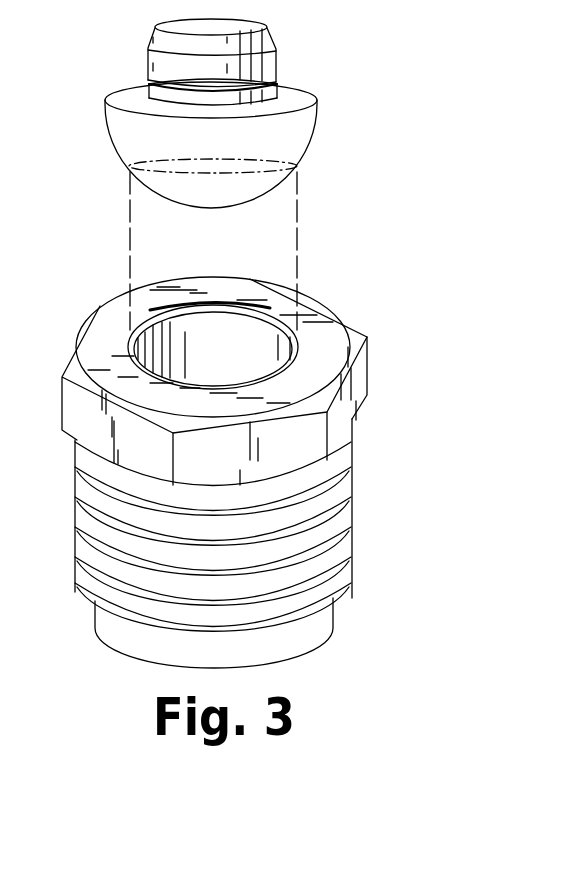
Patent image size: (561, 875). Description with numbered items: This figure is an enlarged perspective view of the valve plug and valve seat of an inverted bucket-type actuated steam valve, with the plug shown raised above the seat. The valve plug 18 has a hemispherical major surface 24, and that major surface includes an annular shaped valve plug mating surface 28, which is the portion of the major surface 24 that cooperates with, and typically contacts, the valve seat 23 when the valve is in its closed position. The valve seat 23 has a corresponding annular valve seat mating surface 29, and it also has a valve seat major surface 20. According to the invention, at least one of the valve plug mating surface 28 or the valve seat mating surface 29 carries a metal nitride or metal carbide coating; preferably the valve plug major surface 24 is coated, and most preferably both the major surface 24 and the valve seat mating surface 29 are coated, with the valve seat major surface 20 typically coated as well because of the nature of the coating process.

The valve plug 18 is at (293, 68).
The hemispherical major surface 24 is at (287, 133).
The valve plug mating surface 28 is at (273, 168).
The valve seat major surface 20 is at (333, 355).
The valve seat mating surface 29 is at (277, 318).
The valve seat 23 is at (365, 512).